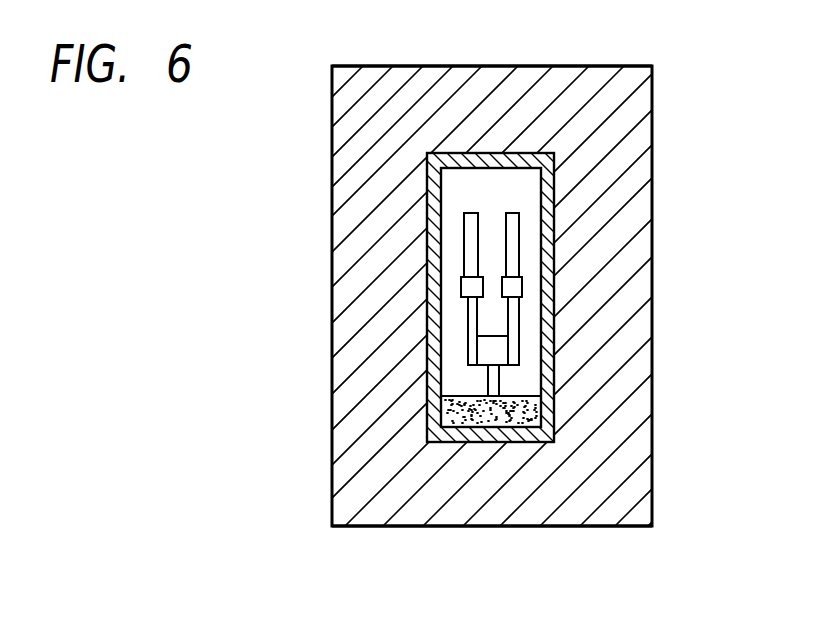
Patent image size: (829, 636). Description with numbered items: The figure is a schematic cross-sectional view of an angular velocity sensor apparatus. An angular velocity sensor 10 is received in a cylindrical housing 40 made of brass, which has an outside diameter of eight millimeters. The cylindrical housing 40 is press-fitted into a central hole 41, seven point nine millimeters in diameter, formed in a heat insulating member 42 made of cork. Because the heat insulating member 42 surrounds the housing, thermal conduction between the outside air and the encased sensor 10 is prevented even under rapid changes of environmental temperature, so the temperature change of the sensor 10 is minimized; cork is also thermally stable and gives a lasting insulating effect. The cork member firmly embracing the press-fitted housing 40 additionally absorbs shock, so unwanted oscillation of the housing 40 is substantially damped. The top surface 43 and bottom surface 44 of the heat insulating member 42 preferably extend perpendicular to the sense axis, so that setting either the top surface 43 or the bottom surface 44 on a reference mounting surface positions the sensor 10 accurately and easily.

The angular velocity sensor 10 is at (528, 256).
The cylindrical housing 40 is at (429, 222).
The central hole 41 is at (545, 404).
The heat insulating member 42 is at (357, 386).
The top surface 43 is at (568, 66).
The bottom surface 44 is at (607, 528).